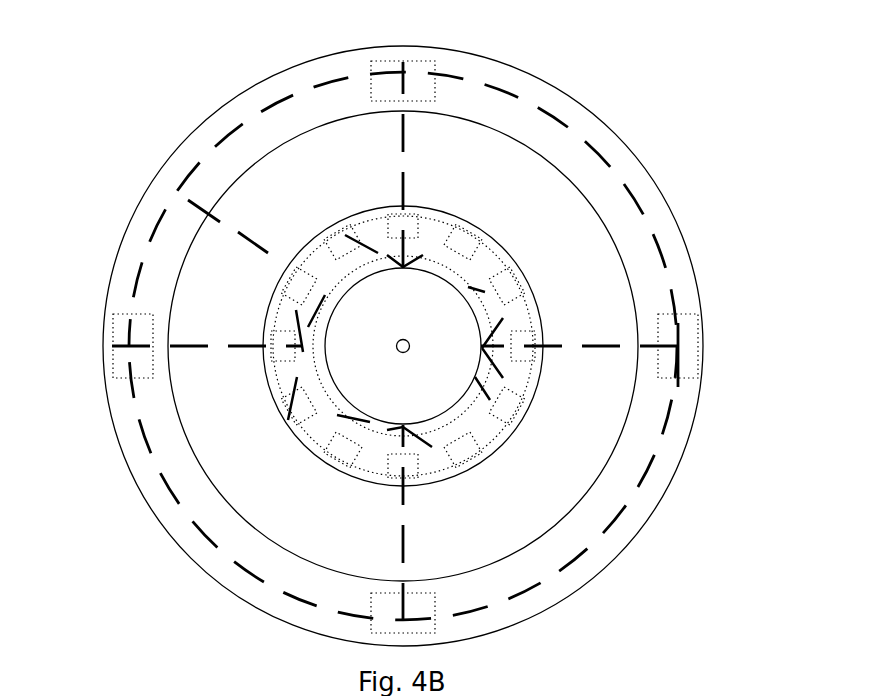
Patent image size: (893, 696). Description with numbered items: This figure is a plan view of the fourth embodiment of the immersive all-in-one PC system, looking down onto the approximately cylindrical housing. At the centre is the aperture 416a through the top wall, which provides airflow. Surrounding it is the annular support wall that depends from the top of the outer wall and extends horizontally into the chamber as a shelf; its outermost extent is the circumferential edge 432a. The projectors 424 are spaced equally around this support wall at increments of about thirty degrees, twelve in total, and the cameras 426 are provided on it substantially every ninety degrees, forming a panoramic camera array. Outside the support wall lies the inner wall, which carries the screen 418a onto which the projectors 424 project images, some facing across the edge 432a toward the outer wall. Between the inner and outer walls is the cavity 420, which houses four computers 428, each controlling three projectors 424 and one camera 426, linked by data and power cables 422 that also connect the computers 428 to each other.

The cavity 420 is at (672, 460).
The data and power cables 422 is at (563, 567).
The projectors 424 is at (275, 336).
The cameras 426 is at (467, 402).
The computers 428 is at (416, 72).
The aperture 416a is at (436, 393).
The screen 418a is at (200, 467).
The circumferential edge 432a is at (540, 307).